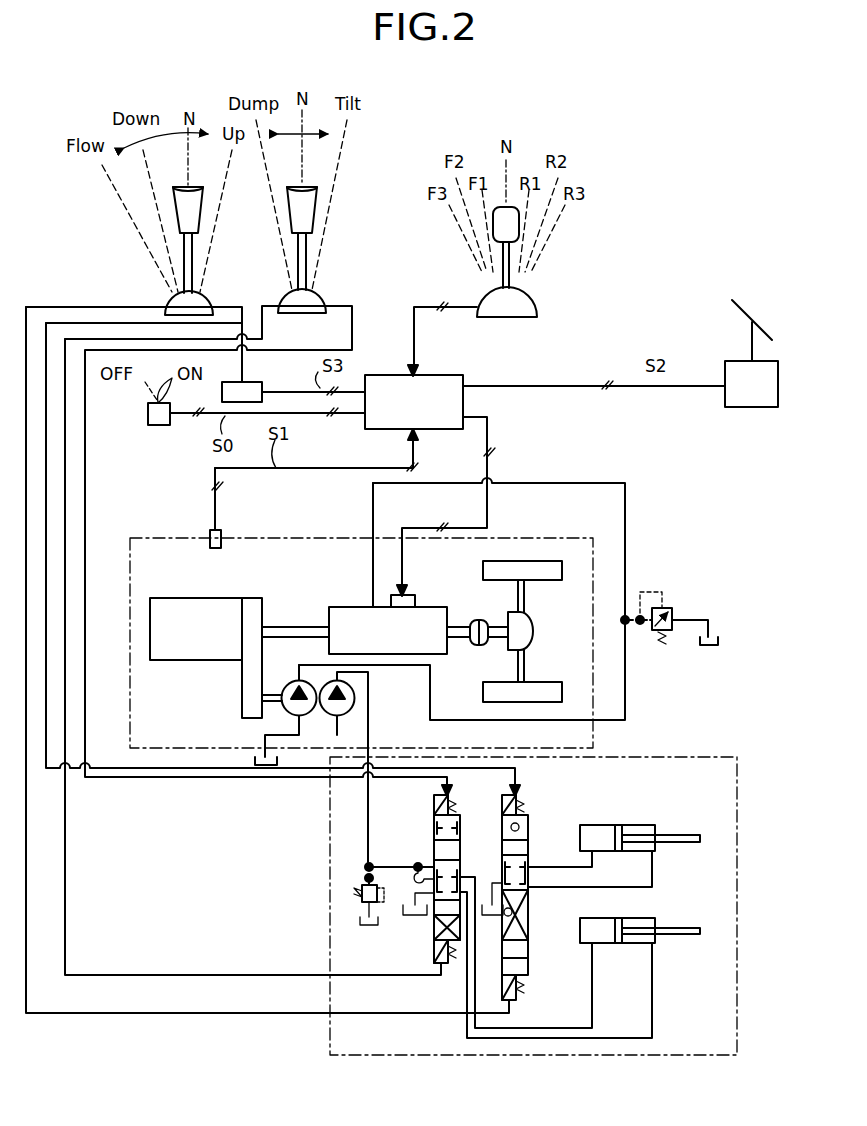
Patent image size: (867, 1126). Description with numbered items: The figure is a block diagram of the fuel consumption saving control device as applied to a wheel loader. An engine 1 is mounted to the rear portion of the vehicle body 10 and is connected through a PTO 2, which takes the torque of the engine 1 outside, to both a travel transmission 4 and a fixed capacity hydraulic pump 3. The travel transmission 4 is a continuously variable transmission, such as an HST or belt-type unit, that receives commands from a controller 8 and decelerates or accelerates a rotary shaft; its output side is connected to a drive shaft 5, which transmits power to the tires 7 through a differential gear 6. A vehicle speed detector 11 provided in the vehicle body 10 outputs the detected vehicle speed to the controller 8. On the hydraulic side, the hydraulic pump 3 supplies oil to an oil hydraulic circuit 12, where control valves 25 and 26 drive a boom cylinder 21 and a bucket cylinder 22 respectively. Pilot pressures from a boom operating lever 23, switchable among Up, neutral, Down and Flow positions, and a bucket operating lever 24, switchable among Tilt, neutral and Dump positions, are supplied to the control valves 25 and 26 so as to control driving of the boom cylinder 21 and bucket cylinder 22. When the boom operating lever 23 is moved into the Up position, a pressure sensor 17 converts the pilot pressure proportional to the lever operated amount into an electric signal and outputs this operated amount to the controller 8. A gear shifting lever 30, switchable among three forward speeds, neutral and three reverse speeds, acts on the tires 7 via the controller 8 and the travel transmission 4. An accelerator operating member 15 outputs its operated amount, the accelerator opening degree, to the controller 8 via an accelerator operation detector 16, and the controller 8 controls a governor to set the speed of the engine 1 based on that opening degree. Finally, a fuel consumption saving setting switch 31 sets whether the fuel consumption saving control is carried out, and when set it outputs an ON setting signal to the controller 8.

The engine 1 is at (170, 598).
The PTO 2 is at (252, 598).
The fixed capacity hydraulic pump 3 is at (355, 700).
The travel transmission 4 is at (343, 607).
The drive shaft 5 is at (462, 637).
The differential gear 6 is at (528, 628).
The tires 7 is at (522, 561).
The controller 8 is at (463, 378).
The vehicle body 10 is at (160, 538).
The vehicle speed detector 11 is at (221, 530).
The oil hydraulic circuit 12 is at (737, 780).
The accelerator operating member 15 is at (755, 322).
The accelerator operation detector 16 is at (778, 378).
The pressure sensor 17 is at (255, 382).
The boom cylinder 21 is at (637, 825).
The bucket cylinder 22 is at (642, 918).
The boom operating lever 23 is at (183, 253).
The bucket operating lever 24 is at (308, 252).
The control valve 25 is at (528, 830).
The control valve 26 is at (434, 928).
The gear shifting lever 30 is at (510, 278).
The fuel consumption saving setting switch 31 is at (158, 425).